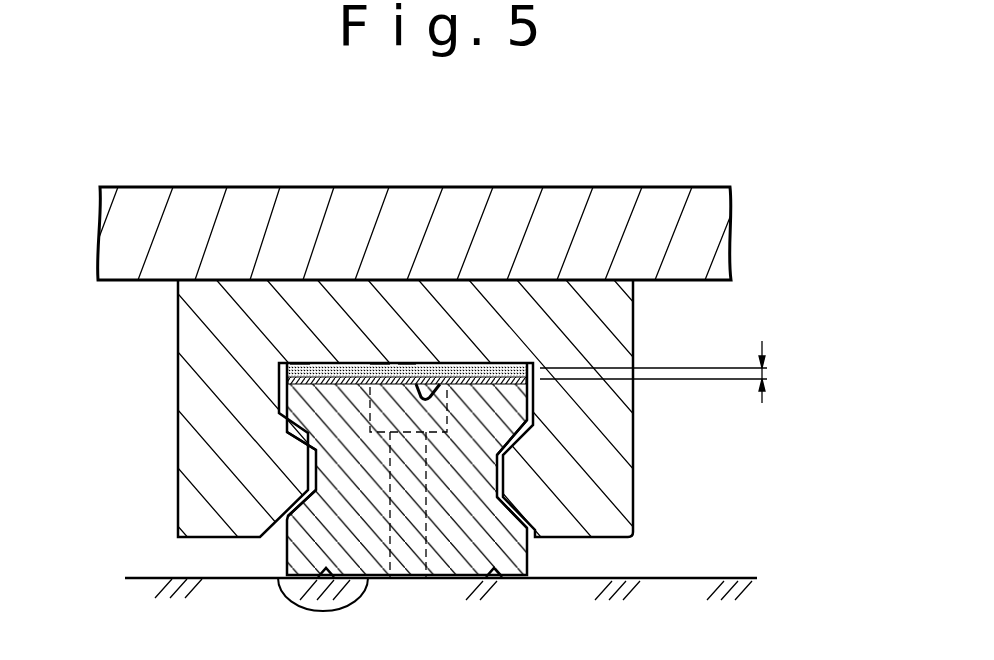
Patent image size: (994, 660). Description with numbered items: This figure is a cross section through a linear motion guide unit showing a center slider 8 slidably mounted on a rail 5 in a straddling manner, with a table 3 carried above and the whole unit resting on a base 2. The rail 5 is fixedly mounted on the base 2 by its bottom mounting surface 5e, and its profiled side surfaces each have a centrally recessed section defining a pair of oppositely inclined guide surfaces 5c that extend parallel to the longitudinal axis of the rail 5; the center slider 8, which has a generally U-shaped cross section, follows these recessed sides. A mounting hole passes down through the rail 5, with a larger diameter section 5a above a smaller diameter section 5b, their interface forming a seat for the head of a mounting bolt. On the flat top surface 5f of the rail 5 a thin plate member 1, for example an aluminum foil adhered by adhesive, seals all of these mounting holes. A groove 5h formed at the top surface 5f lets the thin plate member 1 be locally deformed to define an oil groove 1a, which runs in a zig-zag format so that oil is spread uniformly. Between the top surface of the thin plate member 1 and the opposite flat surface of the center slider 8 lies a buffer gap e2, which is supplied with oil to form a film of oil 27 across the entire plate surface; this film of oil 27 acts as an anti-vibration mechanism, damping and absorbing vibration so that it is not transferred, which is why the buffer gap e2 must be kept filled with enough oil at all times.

The table 3 is at (616, 208).
The center slider 8 is at (636, 300).
The rail 5 is at (532, 555).
The film of oil 27 is at (513, 364).
The thin plate member 1 is at (530, 403).
The oil groove 1a is at (432, 358).
The groove 5h is at (407, 362).
The larger diameter section 5a is at (378, 362).
The flat top surface 5f is at (303, 362).
The inclined guide surfaces 5c is at (295, 437).
The mounting surface 5e is at (286, 582).
The smaller diameter section 5b is at (420, 582).
The base 2 is at (692, 598).
The buffer gap e2 is at (670, 372).